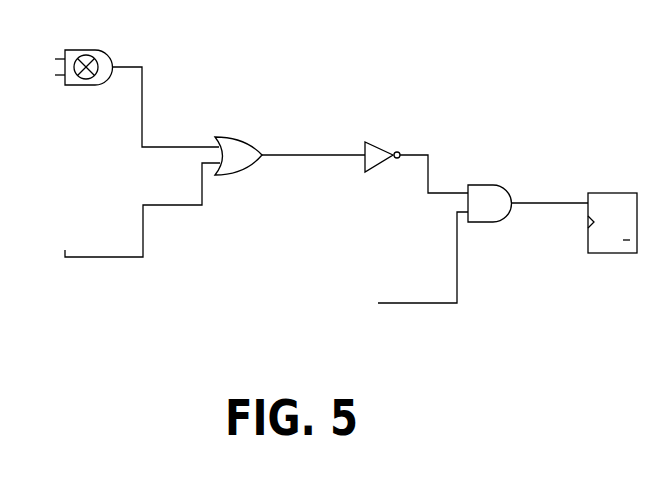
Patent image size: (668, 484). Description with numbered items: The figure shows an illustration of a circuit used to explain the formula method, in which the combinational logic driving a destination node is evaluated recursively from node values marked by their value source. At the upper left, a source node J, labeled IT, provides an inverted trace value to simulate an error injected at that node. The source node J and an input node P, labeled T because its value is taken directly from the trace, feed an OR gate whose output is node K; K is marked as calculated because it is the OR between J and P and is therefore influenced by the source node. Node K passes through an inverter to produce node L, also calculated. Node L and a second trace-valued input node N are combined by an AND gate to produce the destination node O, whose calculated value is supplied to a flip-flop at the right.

The source node J is at (137, 87).
The input node P is at (121, 210).
The OR gate output node K is at (290, 150).
The inverter output node L is at (416, 161).
The input node N is at (410, 257).
The destination node O is at (552, 210).